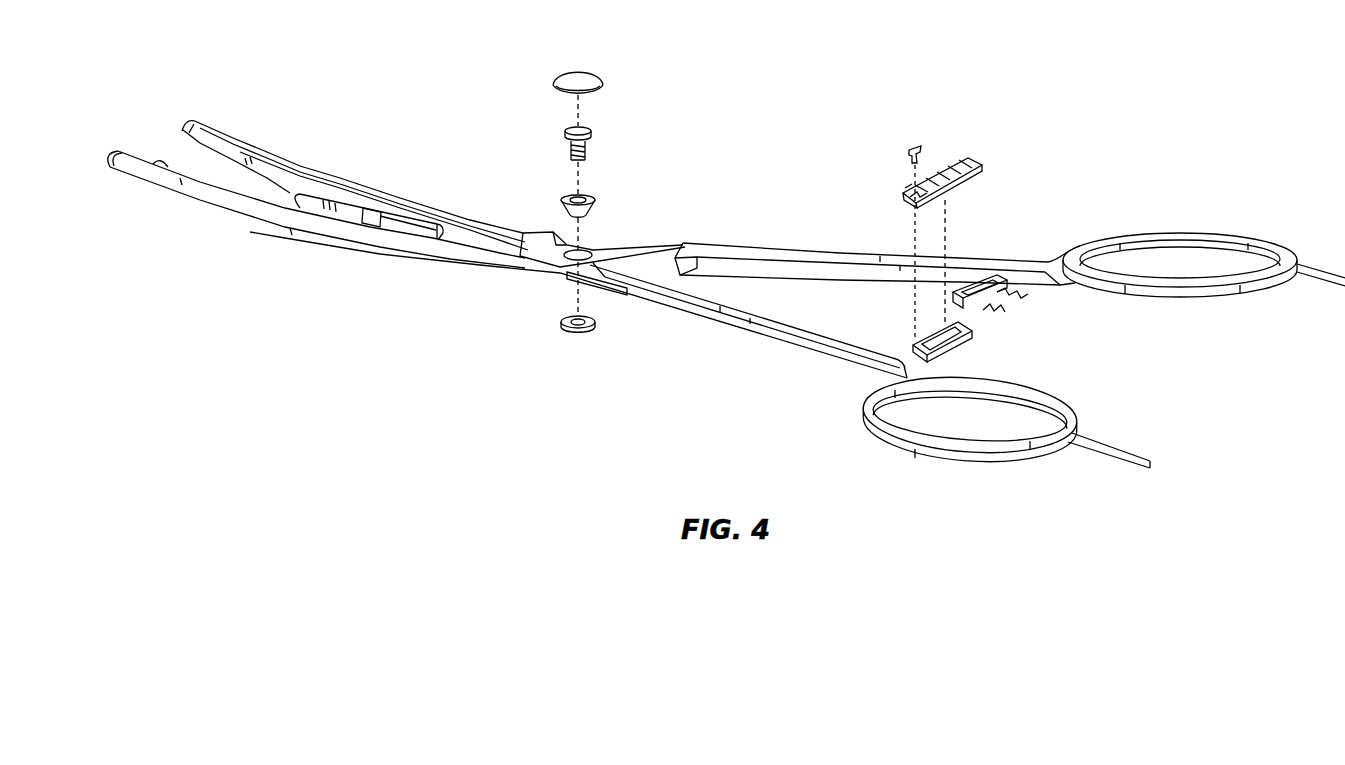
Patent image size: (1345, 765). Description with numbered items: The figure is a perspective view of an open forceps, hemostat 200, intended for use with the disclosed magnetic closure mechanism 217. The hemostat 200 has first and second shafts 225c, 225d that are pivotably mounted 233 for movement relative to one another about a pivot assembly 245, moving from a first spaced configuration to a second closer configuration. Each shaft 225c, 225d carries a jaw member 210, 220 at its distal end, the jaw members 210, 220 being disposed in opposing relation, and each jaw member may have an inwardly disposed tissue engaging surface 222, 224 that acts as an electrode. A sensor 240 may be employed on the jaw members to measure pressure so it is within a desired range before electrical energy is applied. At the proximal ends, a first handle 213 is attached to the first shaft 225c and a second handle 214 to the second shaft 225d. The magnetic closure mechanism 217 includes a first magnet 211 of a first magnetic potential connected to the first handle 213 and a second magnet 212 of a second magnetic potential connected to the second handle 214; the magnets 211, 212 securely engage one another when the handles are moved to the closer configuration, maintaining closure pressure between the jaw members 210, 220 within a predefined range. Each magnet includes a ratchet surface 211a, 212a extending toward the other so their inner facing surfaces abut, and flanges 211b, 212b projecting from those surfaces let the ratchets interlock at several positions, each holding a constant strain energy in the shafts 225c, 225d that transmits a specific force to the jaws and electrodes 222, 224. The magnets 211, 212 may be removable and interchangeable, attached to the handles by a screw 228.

The hemostat 200 is at (637, 363).
The jaw member 210 is at (223, 203).
The jaw member 220 is at (225, 140).
The tissue engaging surface 222 is at (299, 192).
The tissue engaging surface 224 is at (143, 167).
The sensor 240 is at (382, 205).
The pivotable mounting 233 is at (538, 243).
The pivot assembly 245 is at (578, 70).
The first shaft 225c is at (878, 260).
The second shaft 225d is at (800, 343).
The first handle 213 is at (1190, 234).
The second handle 214 is at (943, 452).
The first magnet 211 is at (1008, 298).
The ratchet surface 211a is at (989, 324).
The flanges 211b is at (963, 282).
The second magnet 212 is at (967, 160).
The ratchet surface 212a is at (955, 132).
The flanges 212b is at (936, 333).
The magnetic closure mechanism 217 is at (1103, 331).
The screw 228 is at (916, 145).